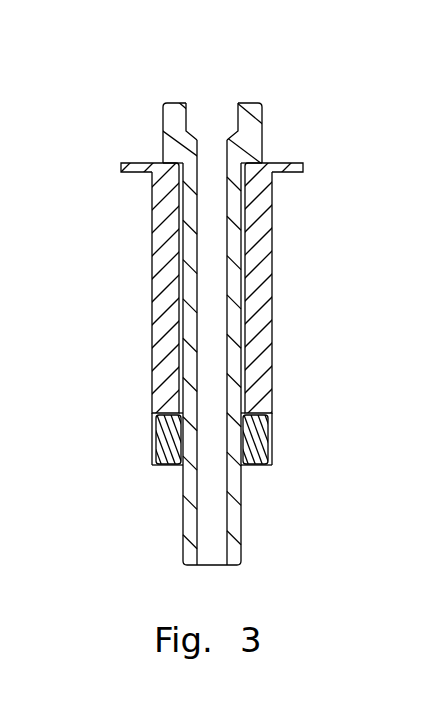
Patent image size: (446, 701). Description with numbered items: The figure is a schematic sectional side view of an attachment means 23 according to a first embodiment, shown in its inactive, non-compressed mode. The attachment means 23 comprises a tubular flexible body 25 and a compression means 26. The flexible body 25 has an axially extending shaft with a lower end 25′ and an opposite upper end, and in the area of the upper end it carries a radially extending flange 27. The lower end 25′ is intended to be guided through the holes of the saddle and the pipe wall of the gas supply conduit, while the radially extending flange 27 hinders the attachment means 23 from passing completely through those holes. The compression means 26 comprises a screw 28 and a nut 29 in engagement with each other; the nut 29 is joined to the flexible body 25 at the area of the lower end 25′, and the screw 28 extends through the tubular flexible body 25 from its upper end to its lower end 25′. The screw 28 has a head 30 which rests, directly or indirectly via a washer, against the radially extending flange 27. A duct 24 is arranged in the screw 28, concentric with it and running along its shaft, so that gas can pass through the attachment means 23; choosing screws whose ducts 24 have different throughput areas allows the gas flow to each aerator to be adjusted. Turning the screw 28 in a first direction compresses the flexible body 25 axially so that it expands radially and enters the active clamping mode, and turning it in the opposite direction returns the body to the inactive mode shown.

The attachment means 23 is at (198, 80).
The duct 24 is at (215, 513).
The flexible body 25 is at (158, 293).
The lower end 25′ is at (170, 468).
The compression means 26 is at (266, 137).
The radially extending flange 27 is at (299, 169).
The screw 28 is at (233, 250).
The nut 29 is at (258, 438).
The head 30 is at (253, 109).